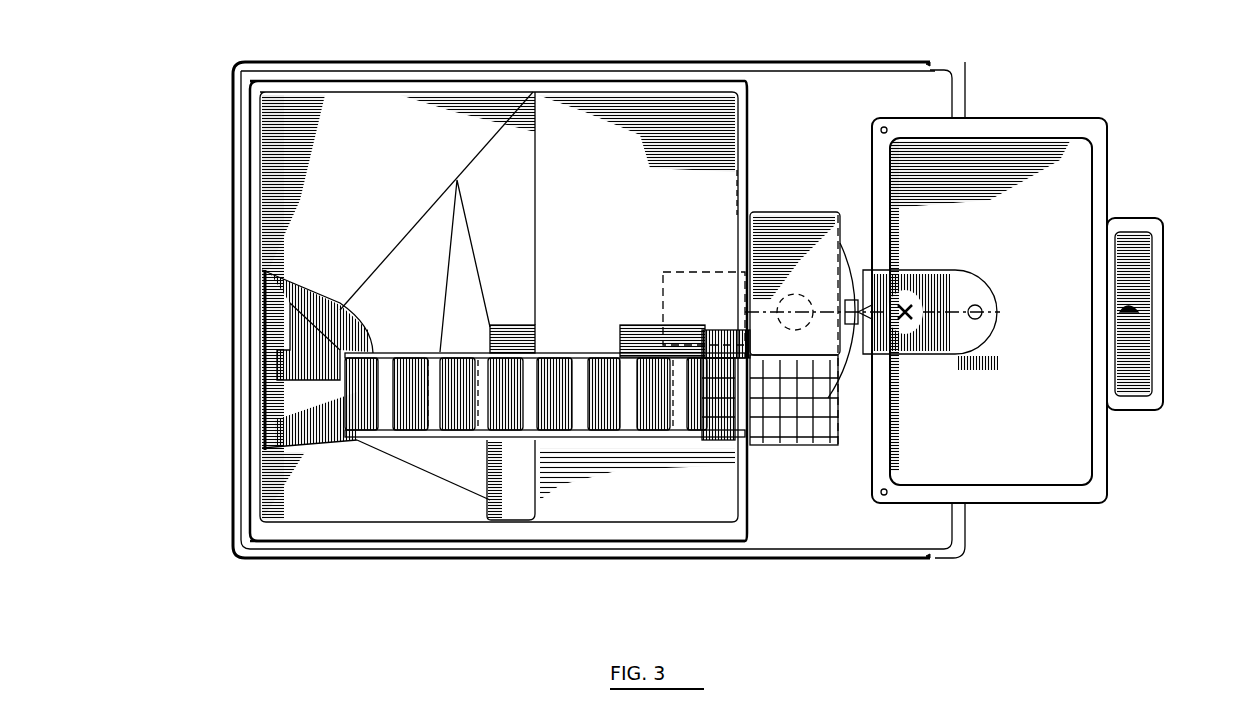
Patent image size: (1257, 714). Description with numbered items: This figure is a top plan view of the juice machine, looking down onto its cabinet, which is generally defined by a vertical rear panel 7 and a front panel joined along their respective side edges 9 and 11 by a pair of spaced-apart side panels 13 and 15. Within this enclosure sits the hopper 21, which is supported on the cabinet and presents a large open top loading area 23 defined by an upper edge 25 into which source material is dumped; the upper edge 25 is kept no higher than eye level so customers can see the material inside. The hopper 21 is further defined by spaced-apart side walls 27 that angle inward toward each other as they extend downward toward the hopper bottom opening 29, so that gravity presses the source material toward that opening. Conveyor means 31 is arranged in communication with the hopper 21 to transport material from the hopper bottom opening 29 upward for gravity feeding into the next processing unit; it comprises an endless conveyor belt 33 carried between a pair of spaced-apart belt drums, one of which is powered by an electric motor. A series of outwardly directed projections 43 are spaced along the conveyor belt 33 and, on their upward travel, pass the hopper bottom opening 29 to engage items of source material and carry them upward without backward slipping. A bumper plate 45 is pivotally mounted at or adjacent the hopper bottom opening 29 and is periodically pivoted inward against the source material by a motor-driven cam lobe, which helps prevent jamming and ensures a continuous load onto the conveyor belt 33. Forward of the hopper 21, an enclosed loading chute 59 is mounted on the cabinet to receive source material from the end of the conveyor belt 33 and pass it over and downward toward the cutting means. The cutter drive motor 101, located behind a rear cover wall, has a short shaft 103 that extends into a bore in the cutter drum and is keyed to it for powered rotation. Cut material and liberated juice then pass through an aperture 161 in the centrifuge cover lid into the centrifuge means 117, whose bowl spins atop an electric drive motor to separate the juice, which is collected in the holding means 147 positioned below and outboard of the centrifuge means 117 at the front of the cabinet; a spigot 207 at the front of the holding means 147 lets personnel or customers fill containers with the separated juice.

The rear panel 7 is at (232, 403).
The side edge 9 is at (230, 555).
The side edge 11 is at (233, 66).
The side panel 13 is at (583, 560).
The side panel 15 is at (592, 62).
The hopper 21 is at (436, 92).
The open top loading area 23 is at (325, 95).
The upper edge 25 is at (352, 540).
The side walls 27 is at (266, 234).
The hopper bottom opening 29 is at (270, 444).
The conveyor means 31 is at (694, 462).
The endless conveyor belt 33 is at (580, 385).
The projections 43 is at (640, 415).
The bumper plate 45 is at (290, 318).
The enclosed loading chute 59 is at (838, 445).
The cutter drive motor 101 is at (665, 290).
The short shaft 103 is at (740, 245).
The centrifuge means 117 is at (766, 205).
The holding means 147 is at (1058, 120).
The aperture 161 is at (812, 300).
The spigot 207 is at (1128, 318).